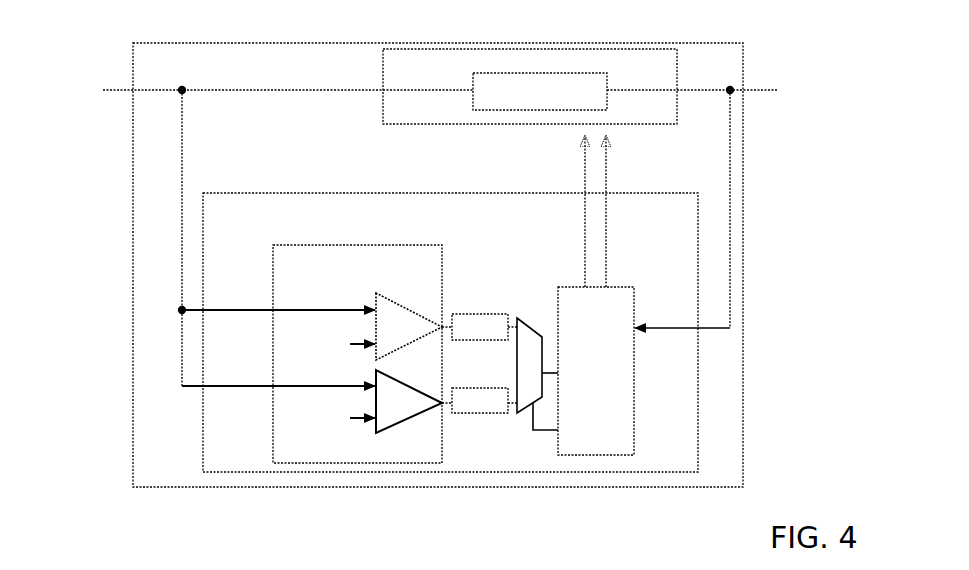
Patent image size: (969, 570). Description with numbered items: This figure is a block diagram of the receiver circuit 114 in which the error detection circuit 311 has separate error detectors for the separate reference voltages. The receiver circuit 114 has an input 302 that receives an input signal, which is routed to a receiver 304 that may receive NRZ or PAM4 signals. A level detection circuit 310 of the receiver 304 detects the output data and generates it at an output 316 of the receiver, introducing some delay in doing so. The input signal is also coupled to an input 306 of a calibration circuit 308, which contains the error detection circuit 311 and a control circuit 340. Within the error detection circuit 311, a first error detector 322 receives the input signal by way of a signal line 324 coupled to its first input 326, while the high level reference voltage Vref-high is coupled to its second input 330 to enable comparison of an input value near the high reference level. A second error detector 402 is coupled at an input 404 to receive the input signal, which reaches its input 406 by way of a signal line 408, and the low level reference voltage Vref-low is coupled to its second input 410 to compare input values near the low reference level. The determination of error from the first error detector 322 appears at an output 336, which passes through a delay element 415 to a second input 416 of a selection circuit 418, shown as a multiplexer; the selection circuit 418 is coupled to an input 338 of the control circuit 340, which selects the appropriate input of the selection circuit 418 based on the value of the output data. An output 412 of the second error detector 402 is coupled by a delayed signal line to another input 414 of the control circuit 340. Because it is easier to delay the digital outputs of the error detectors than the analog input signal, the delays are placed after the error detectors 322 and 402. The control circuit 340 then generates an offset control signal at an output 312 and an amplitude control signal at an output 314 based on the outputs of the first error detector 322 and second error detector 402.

The receiver circuit 114 is at (744, 55).
The input 302 is at (132, 82).
The receiver 304 is at (648, 49).
The input of calibration circuit 306 is at (186, 312).
The calibration circuit 308 is at (668, 193).
The level detection circuit 310 is at (473, 86).
The error detection circuit 311 is at (370, 245).
The output for offset control signal 312 is at (585, 200).
The output for amplitude control signal 314 is at (607, 200).
The output of the receiver 316 is at (680, 92).
The error detector 322 is at (398, 298).
The signal line 324 is at (295, 310).
The first input of error detector 326 is at (373, 309).
The second input of error detector 330 is at (372, 343).
The output of error detector 336 is at (446, 323).
The input of control circuit 338 is at (558, 385).
The control circuit 340 is at (636, 312).
The second error detector 402 is at (404, 428).
The second input 404 is at (205, 386).
The input of second error detector 406 is at (374, 380).
The signal line 408 is at (330, 386).
The second input of second error detector 410 is at (373, 420).
The output of second error detector 412 is at (445, 405).
The input of control circuit 414 is at (514, 390).
The delay element 415 is at (503, 314).
The second input of selection circuit 416 is at (517, 336).
The selection circuit 418 is at (548, 338).